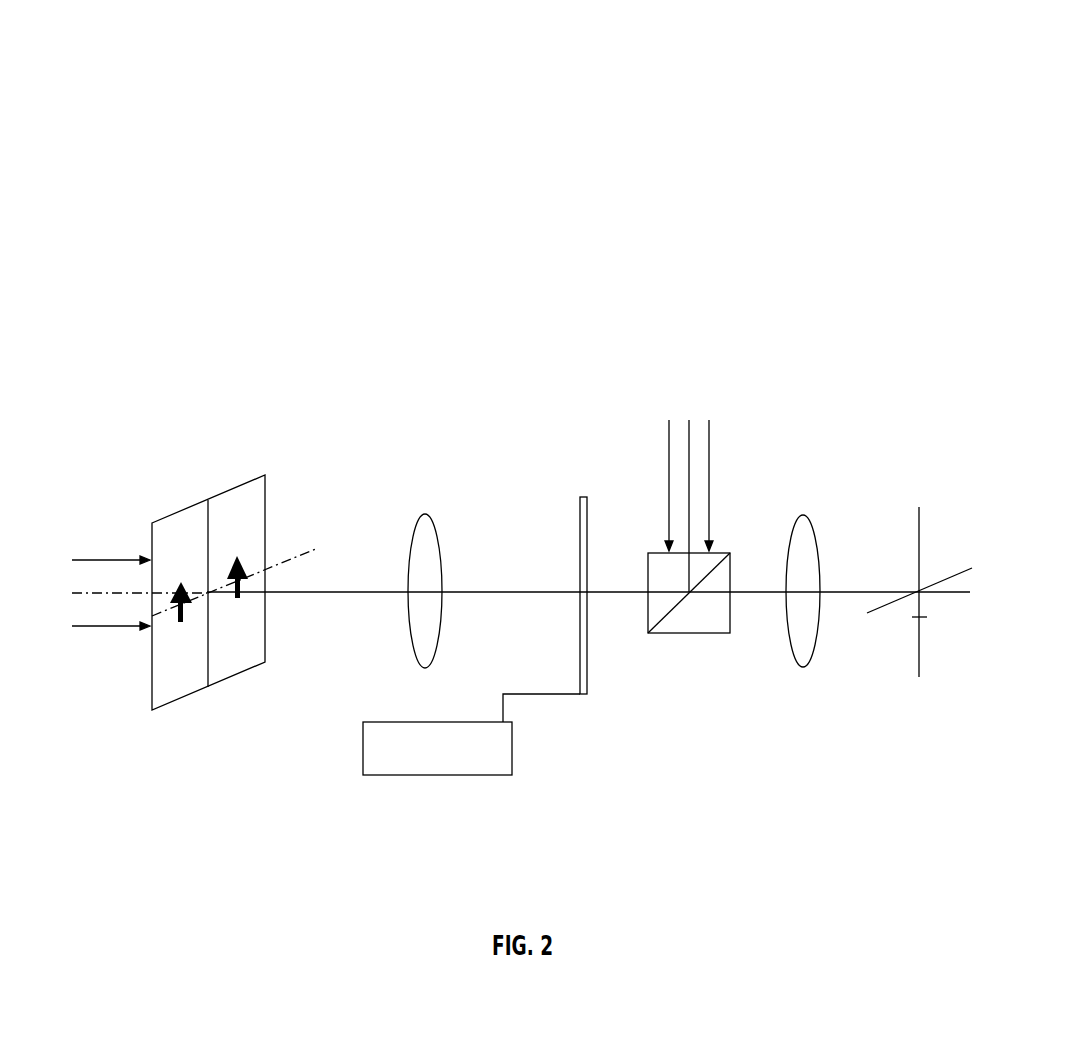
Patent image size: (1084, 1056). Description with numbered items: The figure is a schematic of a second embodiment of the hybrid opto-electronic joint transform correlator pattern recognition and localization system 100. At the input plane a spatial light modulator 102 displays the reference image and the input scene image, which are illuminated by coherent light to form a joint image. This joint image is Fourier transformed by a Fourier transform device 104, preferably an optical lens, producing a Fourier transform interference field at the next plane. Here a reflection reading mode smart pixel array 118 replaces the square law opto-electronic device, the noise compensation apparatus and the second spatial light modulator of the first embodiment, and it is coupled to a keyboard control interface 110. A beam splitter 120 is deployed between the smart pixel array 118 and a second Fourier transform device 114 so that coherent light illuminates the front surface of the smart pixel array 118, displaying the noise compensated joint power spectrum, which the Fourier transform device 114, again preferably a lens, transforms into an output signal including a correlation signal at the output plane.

The hybrid opto-electronic joint transform correlator pattern recognition and locali 100 is at (752, 63).
The spatial light modulator 102 is at (182, 522).
The Fourier transform device 104 is at (426, 530).
The keyboard control interface 110 is at (372, 758).
The Fourier transform device 114 is at (803, 530).
The smart pixel array 118 is at (585, 497).
The beam splitter 120 is at (702, 623).